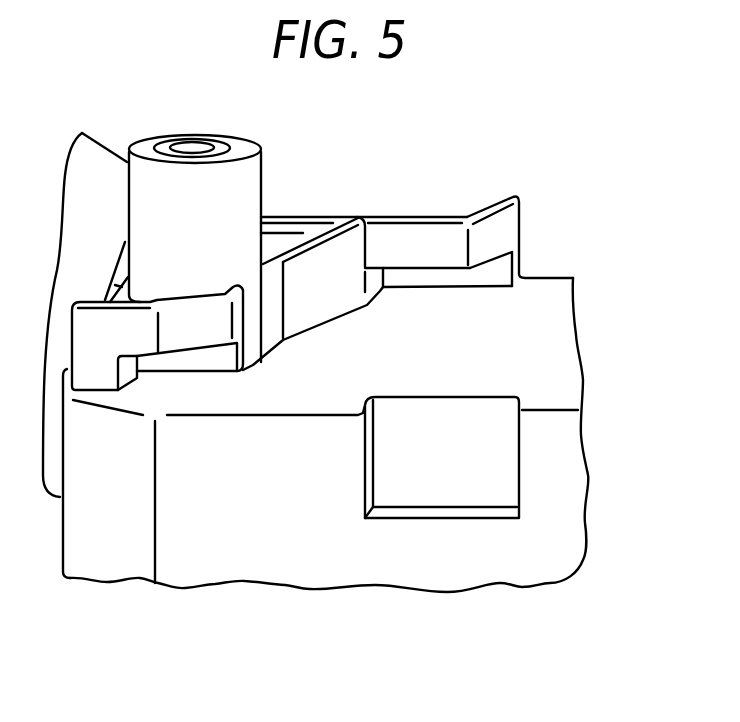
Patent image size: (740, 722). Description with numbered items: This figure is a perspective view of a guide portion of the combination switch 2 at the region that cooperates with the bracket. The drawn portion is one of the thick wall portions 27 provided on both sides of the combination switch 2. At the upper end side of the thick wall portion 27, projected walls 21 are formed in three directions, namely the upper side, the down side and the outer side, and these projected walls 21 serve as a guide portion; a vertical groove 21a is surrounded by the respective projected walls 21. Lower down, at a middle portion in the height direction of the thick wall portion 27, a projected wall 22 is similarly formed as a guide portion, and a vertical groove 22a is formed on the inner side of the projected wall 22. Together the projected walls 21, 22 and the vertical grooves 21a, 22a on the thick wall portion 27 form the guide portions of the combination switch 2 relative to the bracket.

The combination switch 2 is at (337, 315).
The projected wall 21 is at (408, 213).
The vertical groove 21a is at (425, 278).
The projected wall 22 is at (190, 297).
The vertical groove 22a is at (188, 362).
The thick wall portion 27 is at (533, 337).